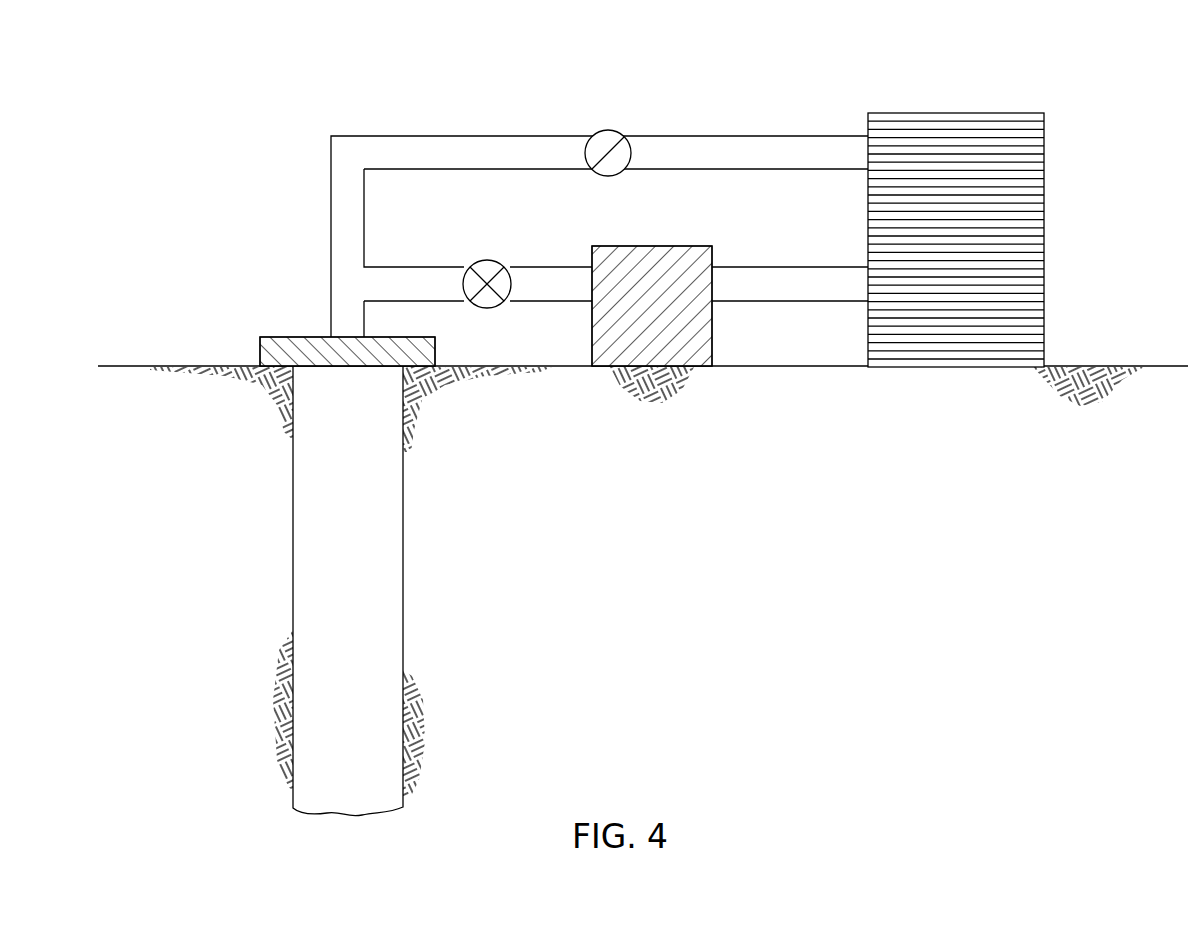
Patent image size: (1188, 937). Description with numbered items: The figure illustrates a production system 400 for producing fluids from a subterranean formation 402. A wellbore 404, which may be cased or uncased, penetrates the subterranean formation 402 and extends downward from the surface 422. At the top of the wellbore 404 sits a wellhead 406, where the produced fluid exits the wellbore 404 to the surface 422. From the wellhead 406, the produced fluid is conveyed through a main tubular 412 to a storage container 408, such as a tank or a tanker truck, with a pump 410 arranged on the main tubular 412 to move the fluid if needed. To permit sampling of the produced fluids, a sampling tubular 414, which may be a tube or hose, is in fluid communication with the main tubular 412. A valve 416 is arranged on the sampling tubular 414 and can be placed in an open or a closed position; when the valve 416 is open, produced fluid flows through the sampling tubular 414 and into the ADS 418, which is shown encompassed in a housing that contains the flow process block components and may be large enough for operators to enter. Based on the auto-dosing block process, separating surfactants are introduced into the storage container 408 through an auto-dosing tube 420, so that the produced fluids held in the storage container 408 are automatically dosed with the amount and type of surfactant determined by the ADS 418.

The production system 400 is at (768, 51).
The subterranean formation 402 is at (675, 562).
The wellbore 404 is at (403, 551).
The wellhead 406 is at (287, 336).
The storage container 408 is at (992, 112).
The pump 410 is at (603, 130).
The main tubular 412 is at (810, 135).
The sampling tubular 414 is at (396, 266).
The valve 416 is at (481, 260).
The ADS 418 is at (675, 246).
The auto-dosing tube 420 is at (810, 266).
The surface 422 is at (126, 365).